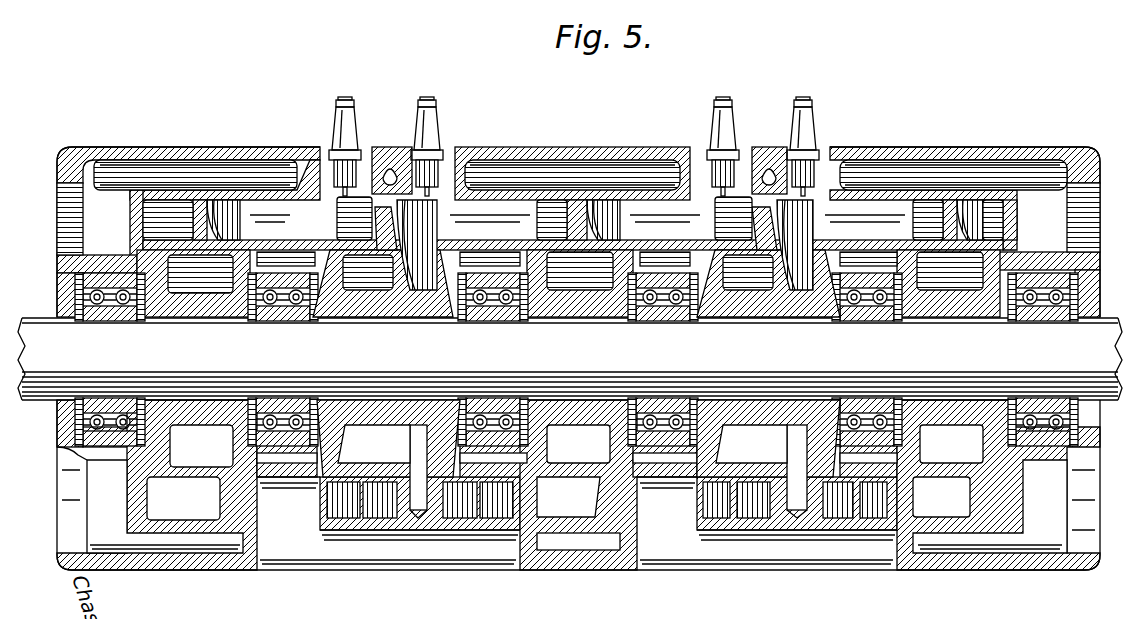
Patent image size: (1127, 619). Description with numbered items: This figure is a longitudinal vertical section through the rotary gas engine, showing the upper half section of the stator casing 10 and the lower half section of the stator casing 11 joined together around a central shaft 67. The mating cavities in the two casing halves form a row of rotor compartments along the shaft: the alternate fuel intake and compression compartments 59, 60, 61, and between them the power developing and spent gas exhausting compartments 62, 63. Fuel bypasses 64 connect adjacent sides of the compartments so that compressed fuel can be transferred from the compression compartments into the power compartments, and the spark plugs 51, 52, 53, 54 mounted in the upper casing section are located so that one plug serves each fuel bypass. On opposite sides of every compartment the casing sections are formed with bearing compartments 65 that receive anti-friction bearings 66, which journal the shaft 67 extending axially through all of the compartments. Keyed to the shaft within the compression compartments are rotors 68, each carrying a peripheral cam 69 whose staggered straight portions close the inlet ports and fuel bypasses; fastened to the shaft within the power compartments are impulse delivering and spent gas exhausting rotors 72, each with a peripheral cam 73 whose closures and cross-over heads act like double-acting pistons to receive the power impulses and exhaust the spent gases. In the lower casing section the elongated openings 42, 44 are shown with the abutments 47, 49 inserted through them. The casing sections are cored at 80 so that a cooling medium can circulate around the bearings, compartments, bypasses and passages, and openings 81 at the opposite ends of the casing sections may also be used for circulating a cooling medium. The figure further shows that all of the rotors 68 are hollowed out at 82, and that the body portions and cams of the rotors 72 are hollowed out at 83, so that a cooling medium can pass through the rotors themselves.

The upper half section of the stator casing 10 is at (139, 141).
The lower half section of the stator casing 11 is at (199, 579).
The elongated opening 42 is at (330, 562).
The elongated opening 44 is at (722, 562).
The abutment 47 is at (465, 522).
The abutment 49 is at (845, 522).
The spark plug 51 is at (340, 118).
The spark plug 52 is at (420, 120).
The spark plug 53 is at (735, 115).
The spark plug 54 is at (818, 120).
The fuel intake and compression compartment 59 is at (172, 200).
The fuel intake and compression compartment 60 is at (548, 205).
The fuel intake and compression compartment 61 is at (990, 200).
The power developing and spent gas exhausting compartment 62 is at (333, 205).
The power developing and spent gas exhausting compartment 63 is at (677, 205).
The fuel bypass 64 is at (270, 215).
The bearing compartment 65 is at (85, 258).
The anti-friction bearing 66 is at (75, 298).
The shaft 67 is at (570, 359).
The rotor 68 is at (200, 312).
The peripheral cam 69 is at (215, 210).
The impulse delivering and spent gas exhausting rotor 72 is at (375, 310).
The peripheral cam 73 is at (418, 518).
The coring 80 is at (101, 157).
The opening 81 is at (65, 208).
The hollow 82 is at (950, 470).
The hollow 83 is at (562, 444).